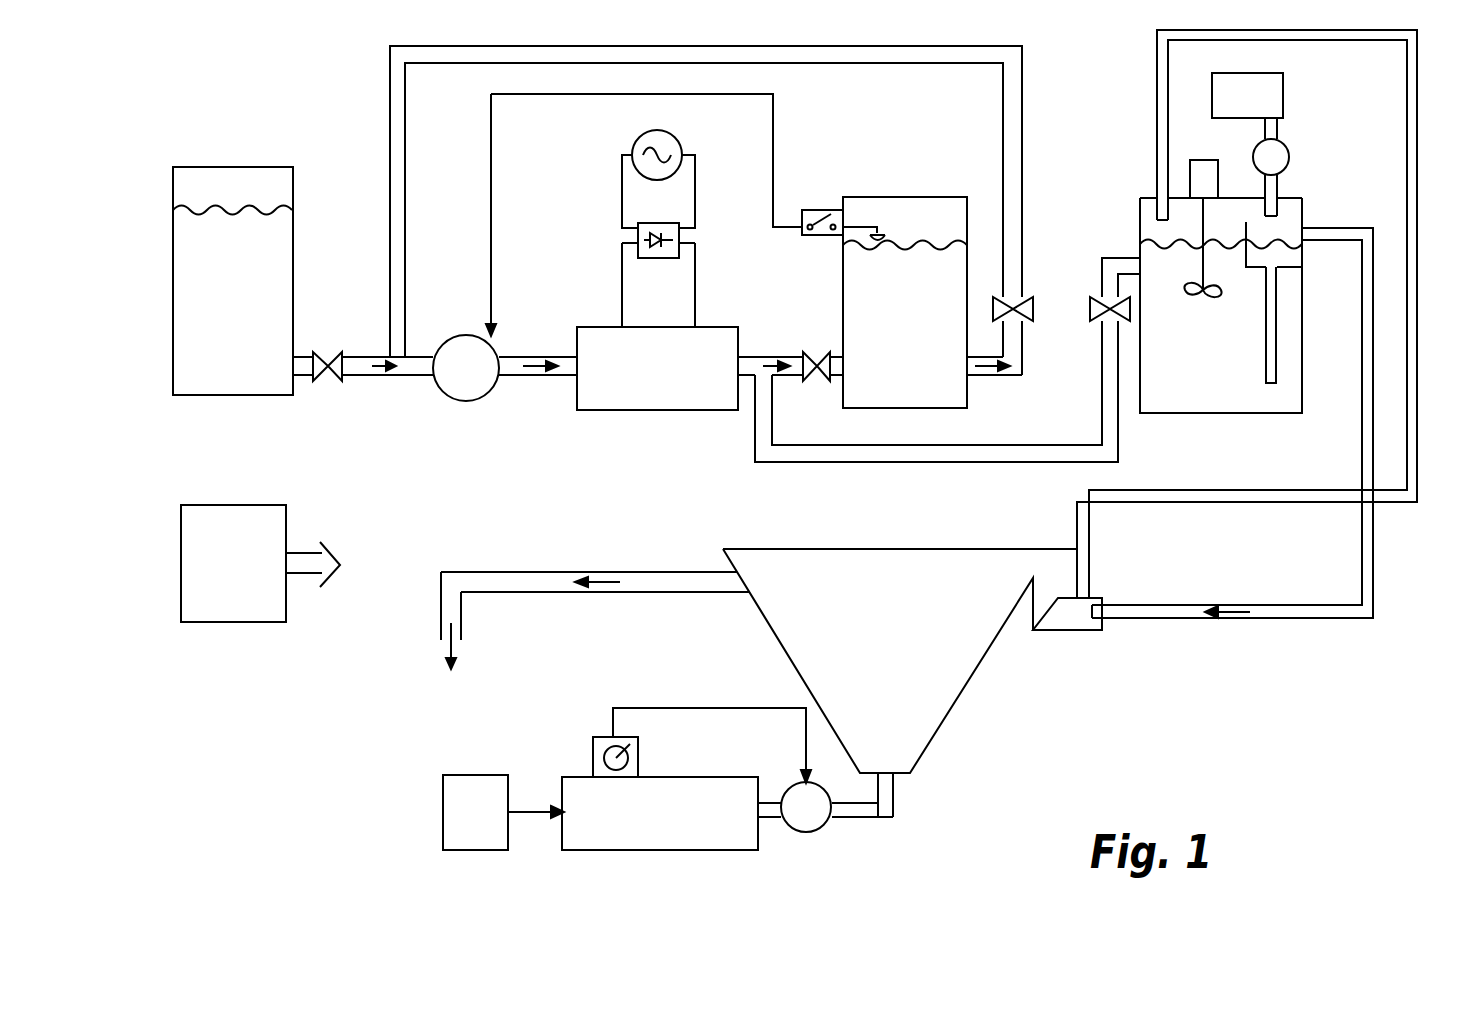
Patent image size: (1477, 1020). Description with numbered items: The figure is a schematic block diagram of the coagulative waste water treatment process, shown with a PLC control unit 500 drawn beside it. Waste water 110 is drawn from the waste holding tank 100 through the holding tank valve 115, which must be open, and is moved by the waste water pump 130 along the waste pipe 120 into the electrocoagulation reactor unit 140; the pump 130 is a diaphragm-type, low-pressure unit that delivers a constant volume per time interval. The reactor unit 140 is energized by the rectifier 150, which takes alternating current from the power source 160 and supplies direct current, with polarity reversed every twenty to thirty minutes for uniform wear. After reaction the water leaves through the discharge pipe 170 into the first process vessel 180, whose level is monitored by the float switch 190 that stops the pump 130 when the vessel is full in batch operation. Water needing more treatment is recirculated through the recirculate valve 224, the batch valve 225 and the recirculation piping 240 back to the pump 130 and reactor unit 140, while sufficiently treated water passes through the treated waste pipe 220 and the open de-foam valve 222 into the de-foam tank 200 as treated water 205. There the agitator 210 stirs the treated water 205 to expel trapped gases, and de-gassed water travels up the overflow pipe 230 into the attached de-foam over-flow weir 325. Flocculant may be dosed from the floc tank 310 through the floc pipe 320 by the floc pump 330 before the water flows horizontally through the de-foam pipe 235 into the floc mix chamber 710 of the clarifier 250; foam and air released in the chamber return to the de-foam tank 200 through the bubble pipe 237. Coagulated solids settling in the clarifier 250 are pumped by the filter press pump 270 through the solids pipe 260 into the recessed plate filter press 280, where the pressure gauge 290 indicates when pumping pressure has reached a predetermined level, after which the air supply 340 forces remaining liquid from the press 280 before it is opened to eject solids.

The waste holding tank 100 is at (173, 303).
The waste water 110 is at (217, 303).
The holding tank valve 115 is at (326, 352).
The waste pipe 120 is at (408, 380).
The waste water pump 130 is at (449, 384).
The electrocoagulation reactor unit 140 is at (641, 394).
The rectifier 150 is at (656, 259).
The power source 160 is at (656, 141).
The discharge pipe 170 is at (772, 356).
The first process vessel 180 is at (949, 409).
The float switch 190 is at (820, 209).
The de-foam tank 200 is at (1211, 414).
The treated water 205 is at (1196, 343).
The agitator 210 is at (1214, 177).
The treated waste pipe 220 is at (933, 463).
The de-foam valve 222 is at (1095, 312).
The recirculate valve 224 is at (1028, 313).
The batch valve 225 is at (822, 382).
The overflow pipe 230 is at (1264, 337).
The de-foam pipe 235 is at (1200, 621).
The bubble pipe 237 is at (1418, 192).
The recirculation piping 240 is at (858, 64).
The clarifier 250 is at (864, 671).
The solids pipe 260 is at (772, 805).
The filter press pump 270 is at (822, 831).
The recessed plate filter press 280 is at (639, 828).
The pressure gauge 290 is at (601, 736).
The floc tank 310 is at (1228, 112).
The floc pipe 320 is at (1279, 129).
The de-foam over-flow weir 325 is at (1286, 268).
The floc pump 330 is at (1290, 157).
The air supply 340 is at (458, 828).
The programmable logic controller 500 is at (222, 505).
The floc mix chamber 710 is at (1032, 610).